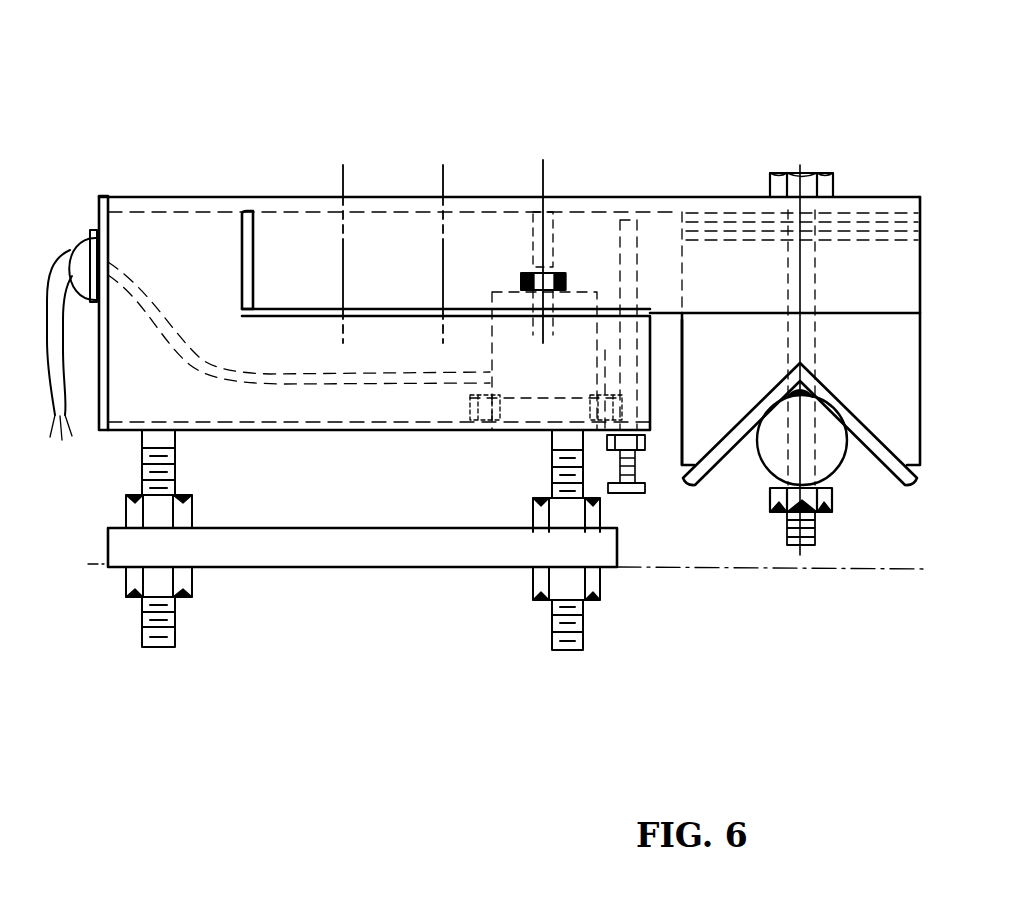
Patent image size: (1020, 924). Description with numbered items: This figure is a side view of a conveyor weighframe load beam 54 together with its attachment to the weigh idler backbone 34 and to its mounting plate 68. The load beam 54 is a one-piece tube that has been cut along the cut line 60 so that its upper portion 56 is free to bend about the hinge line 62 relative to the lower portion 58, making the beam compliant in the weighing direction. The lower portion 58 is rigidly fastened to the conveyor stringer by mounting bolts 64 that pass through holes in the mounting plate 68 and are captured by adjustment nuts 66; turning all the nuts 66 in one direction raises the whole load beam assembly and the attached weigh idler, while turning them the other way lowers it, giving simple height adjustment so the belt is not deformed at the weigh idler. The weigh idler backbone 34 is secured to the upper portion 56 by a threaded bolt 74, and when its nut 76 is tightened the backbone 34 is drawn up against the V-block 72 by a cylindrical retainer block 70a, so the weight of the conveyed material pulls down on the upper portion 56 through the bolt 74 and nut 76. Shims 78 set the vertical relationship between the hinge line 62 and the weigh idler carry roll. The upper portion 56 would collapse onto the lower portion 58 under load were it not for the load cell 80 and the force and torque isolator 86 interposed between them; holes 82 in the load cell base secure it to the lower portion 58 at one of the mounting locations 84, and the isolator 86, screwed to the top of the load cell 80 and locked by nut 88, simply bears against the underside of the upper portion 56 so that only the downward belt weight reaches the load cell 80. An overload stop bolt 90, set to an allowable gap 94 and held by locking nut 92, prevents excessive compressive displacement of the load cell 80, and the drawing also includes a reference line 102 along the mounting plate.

The weigh idler backbone 34 is at (885, 450).
The load beam 54 is at (213, 285).
The upper portion of load beam 56 is at (390, 250).
The lower portion of load beam 58 is at (385, 337).
The cut line 60 is at (247, 268).
The hinge line 62 is at (248, 196).
The mounting bolts 64 is at (552, 633).
The adjustment nuts 66 is at (530, 512).
The mounting plate 68 is at (307, 550).
The cylindrical retainer block 70a is at (849, 462).
The V-block 72 is at (723, 402).
The threaded bolt 74 is at (817, 527).
The nut 76 is at (770, 505).
The shims 78 is at (727, 232).
The load cell 80 is at (507, 353).
The holes in load cell base 82 is at (500, 413).
The load cell mounting locations 84 is at (517, 260).
The force and torque isolator 86 is at (533, 230).
The nut 88 is at (563, 282).
The overload stop bolt 90 is at (613, 457).
The locking nut 92 is at (628, 428).
The allowable gap 94 is at (610, 222).
The center axis 102 is at (660, 568).